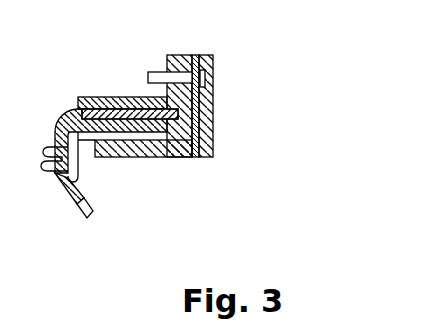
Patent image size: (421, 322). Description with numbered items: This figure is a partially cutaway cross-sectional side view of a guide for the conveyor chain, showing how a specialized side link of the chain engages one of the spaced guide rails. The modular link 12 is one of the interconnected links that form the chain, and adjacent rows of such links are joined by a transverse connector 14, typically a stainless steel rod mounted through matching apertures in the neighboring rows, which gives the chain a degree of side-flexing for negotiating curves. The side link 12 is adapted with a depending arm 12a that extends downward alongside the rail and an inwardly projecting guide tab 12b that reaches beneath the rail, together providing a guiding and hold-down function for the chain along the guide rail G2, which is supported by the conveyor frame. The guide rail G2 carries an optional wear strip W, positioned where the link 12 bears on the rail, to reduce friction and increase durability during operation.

The modular link 12 is at (207, 57).
The depending arm 12a is at (212, 146).
The inwardly projecting guide tab 12b is at (147, 154).
The transverse connector 14 is at (152, 78).
The wear strip W is at (178, 115).
The guide rail G2 is at (72, 208).